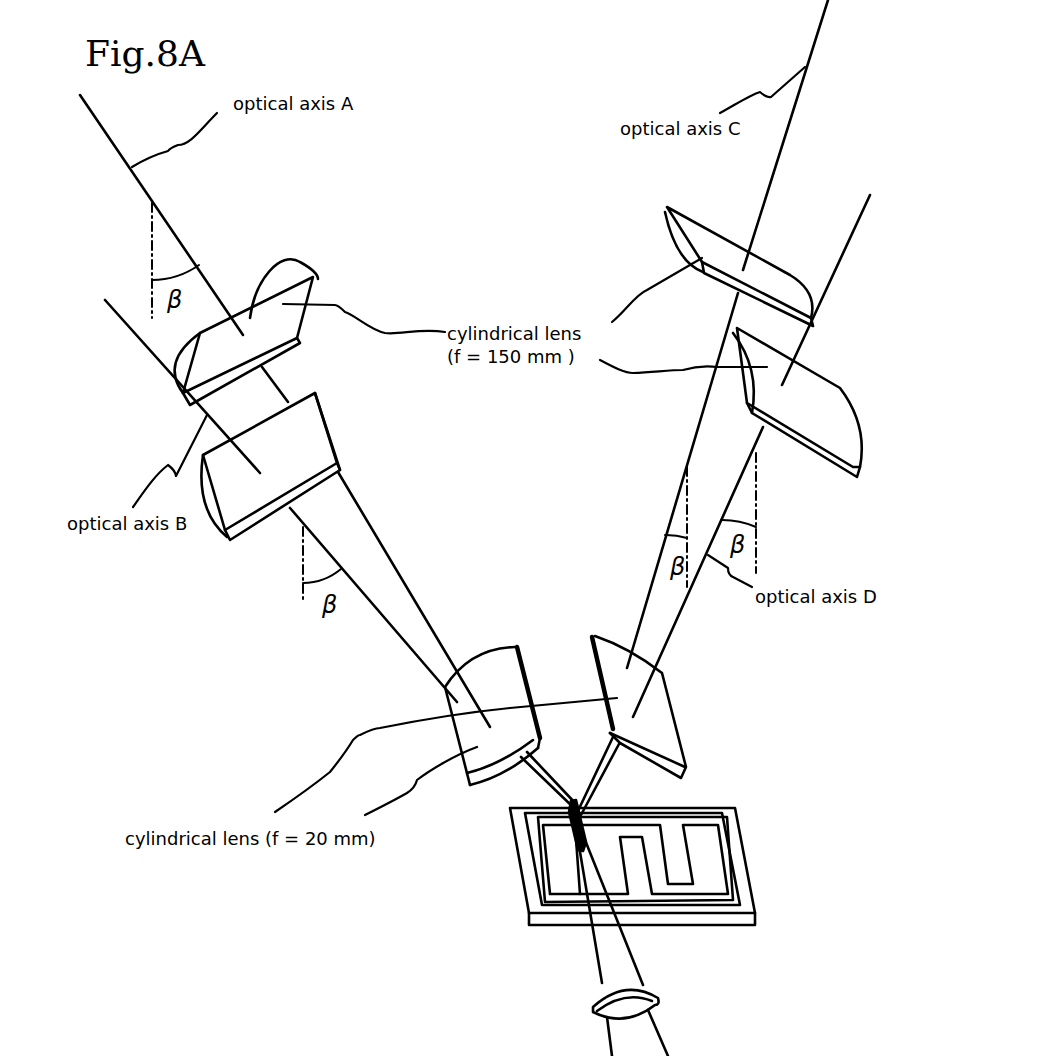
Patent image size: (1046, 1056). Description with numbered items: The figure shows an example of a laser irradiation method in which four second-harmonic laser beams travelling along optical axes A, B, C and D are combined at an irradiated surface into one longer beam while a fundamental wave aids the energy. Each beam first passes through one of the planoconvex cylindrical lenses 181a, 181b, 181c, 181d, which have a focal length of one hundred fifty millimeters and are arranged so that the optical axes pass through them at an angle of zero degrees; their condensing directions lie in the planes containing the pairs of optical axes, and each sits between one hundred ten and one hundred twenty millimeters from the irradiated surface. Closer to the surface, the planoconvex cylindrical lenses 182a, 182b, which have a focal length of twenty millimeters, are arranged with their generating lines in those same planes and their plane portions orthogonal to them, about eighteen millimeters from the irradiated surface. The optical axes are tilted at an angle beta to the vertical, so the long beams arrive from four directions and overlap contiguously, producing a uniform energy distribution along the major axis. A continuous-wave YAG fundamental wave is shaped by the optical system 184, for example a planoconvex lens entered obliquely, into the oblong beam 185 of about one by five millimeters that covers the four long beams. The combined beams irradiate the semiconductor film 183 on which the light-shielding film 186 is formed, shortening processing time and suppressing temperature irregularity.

The planoconvex cylindrical lens 181a is at (300, 277).
The planoconvex cylindrical lens 181b is at (303, 433).
The planoconvex cylindrical lens 181c is at (770, 268).
The planoconvex cylindrical lens 181d is at (743, 407).
The planoconvex cylindrical lens 182a is at (457, 703).
The planoconvex cylindrical lens 182b is at (663, 733).
The semiconductor film 183 is at (735, 840).
The optical system 184 is at (658, 1000).
The oblong beam 185 is at (577, 837).
The light-shielding film 186 is at (732, 878).